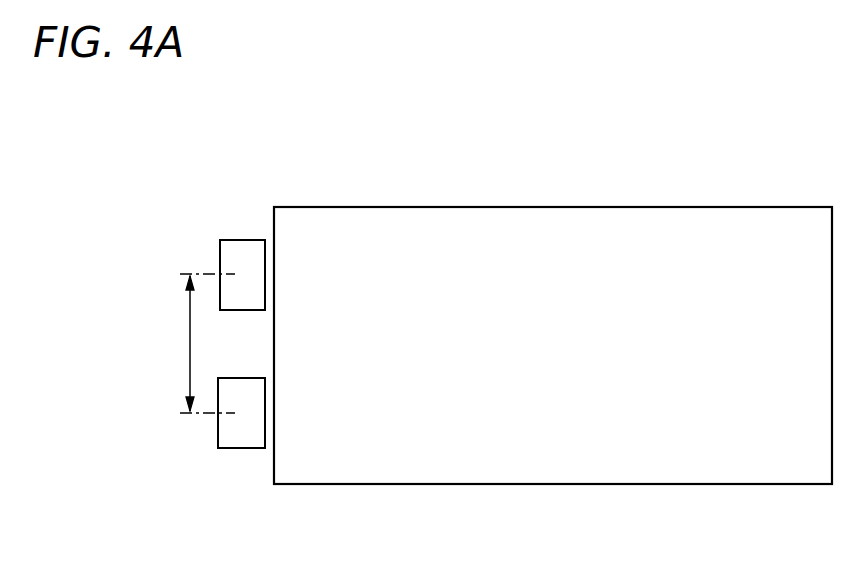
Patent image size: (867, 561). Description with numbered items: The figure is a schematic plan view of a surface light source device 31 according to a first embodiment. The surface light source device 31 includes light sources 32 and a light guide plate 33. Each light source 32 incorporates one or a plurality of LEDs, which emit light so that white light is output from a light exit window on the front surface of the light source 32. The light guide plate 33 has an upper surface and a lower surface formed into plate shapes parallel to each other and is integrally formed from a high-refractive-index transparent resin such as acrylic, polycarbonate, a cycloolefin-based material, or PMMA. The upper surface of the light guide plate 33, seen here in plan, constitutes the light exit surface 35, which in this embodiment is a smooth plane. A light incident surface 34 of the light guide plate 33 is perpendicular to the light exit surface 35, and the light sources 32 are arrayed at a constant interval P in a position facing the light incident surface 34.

The surface light source device 31 is at (761, 128).
The light source 32 is at (233, 257).
The light guide plate 33 is at (578, 316).
The light incident surface 34 is at (273, 346).
The light exit surface 35 is at (578, 316).
The constant interval P is at (200, 343).